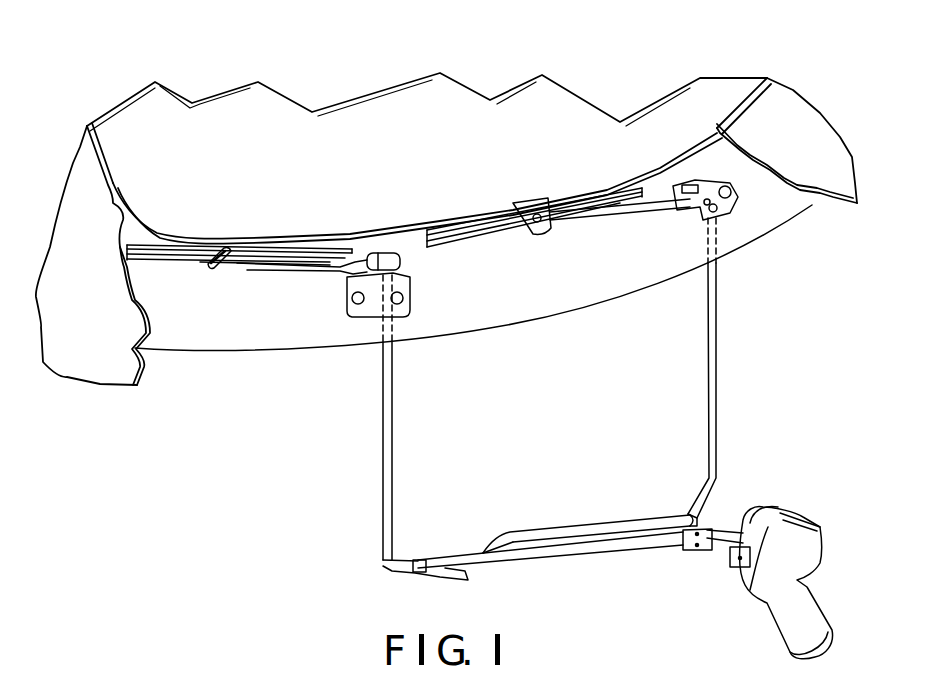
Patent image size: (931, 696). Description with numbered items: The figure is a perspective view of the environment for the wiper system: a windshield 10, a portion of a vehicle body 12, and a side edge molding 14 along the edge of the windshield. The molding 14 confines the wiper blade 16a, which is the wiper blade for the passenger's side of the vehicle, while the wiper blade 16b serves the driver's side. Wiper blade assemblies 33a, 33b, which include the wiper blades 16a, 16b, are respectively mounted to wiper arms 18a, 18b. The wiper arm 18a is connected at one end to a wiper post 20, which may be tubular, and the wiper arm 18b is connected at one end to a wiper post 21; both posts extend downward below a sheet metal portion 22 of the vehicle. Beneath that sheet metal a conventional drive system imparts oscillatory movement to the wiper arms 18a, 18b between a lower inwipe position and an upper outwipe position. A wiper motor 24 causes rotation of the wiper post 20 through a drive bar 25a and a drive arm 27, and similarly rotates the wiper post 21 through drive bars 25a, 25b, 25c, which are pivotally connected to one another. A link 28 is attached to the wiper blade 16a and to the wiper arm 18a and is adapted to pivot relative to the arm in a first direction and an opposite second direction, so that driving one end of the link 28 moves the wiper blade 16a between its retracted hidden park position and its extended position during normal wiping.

The windshield 10 is at (341, 120).
The vehicle body 12 is at (97, 157).
The side edge molding 14 is at (118, 262).
The wiper blade 16a is at (183, 250).
The wiper blade 16b is at (480, 213).
The wiper arm 18a is at (297, 262).
The wiper arm 18b is at (600, 213).
The wiper post 20 is at (393, 432).
The wiper post 21 is at (718, 394).
The sheet metal portion 22 is at (215, 345).
The wiper motor 24 is at (822, 548).
The drive bar 25a is at (580, 552).
The drive bar 25b is at (580, 520).
The drive bar 25c is at (695, 498).
The drive arm 27 is at (400, 558).
The link 28 is at (205, 262).
The wiper blade assembly 33a is at (236, 239).
The wiper blade assembly 33b is at (558, 199).